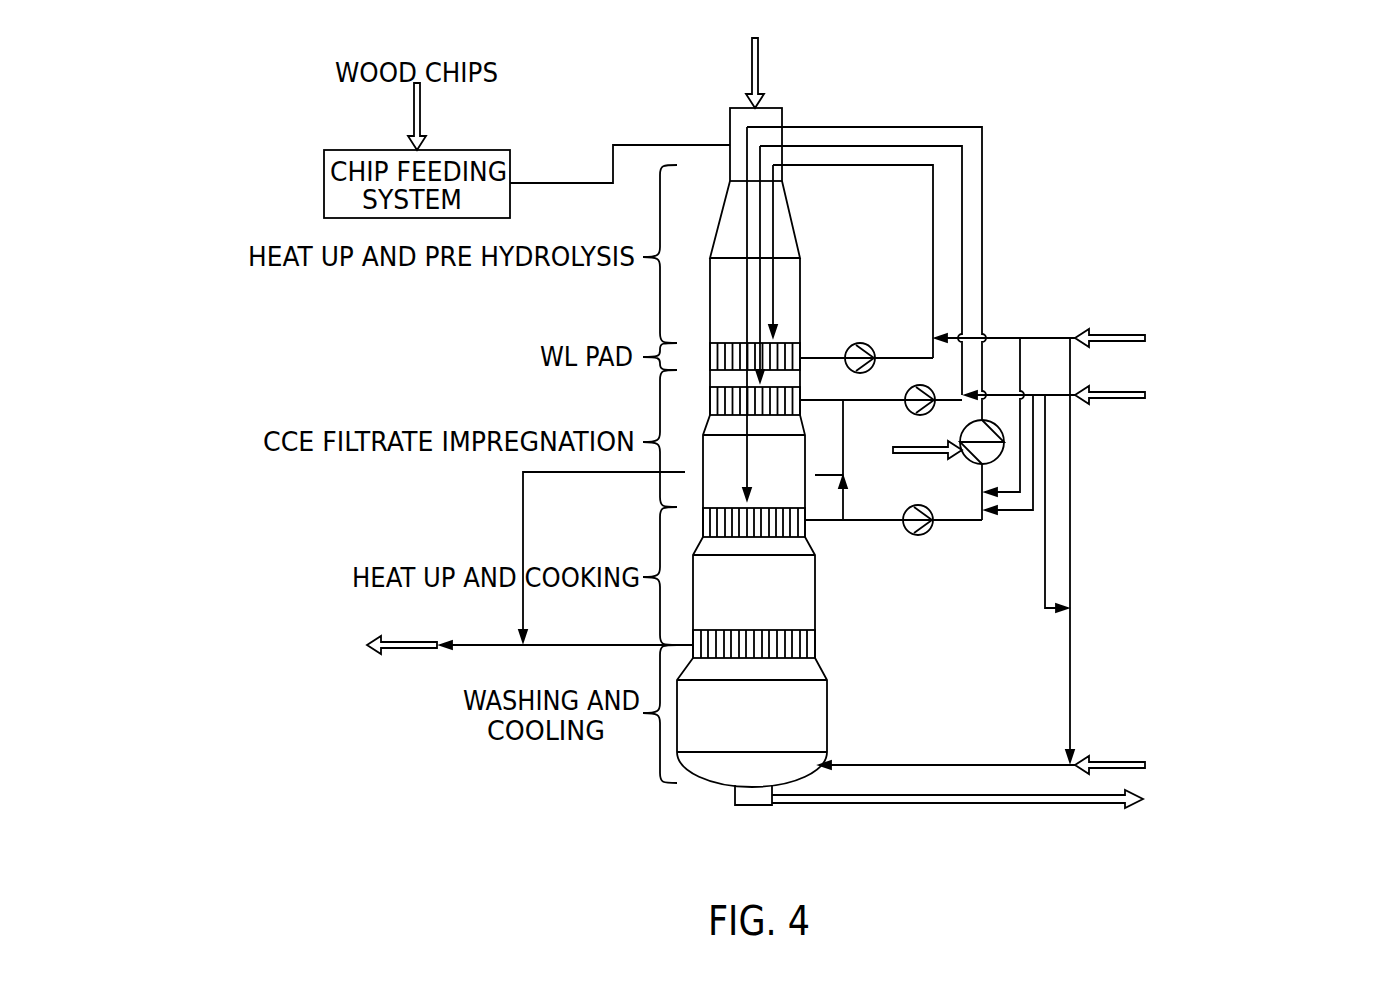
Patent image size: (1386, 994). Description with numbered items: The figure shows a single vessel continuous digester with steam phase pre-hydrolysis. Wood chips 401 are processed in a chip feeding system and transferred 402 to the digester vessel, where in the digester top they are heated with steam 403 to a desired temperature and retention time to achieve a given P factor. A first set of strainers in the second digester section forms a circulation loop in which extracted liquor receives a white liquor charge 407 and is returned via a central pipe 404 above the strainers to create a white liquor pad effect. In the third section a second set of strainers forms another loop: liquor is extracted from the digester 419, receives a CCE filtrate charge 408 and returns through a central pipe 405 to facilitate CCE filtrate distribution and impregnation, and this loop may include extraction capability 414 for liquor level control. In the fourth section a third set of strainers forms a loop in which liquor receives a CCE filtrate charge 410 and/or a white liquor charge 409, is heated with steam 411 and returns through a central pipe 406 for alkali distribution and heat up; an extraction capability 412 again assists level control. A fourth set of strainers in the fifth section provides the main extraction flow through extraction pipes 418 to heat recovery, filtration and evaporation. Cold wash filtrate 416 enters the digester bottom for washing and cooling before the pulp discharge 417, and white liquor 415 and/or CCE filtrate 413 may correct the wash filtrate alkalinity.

The wood chips 401 is at (422, 107).
The transfer to digester vessel 402 is at (562, 183).
The steam 403 is at (748, 67).
The central pipe 404 is at (928, 164).
The central pipe 405 is at (885, 145).
The central pipe 406 is at (838, 126).
The white liquor charge 407 is at (1115, 333).
The CCE filtrate charge 408 is at (1118, 400).
The white liquor charge 409 is at (1022, 362).
The CCE filtrate charge 410 is at (1013, 512).
The steam 411 is at (932, 455).
The extraction capability 412 is at (845, 497).
The CCE filtrate 413 is at (1040, 592).
The extraction capability 414 is at (522, 508).
The white liquor 415 is at (1068, 692).
The cold wash filtrate 416 is at (1115, 757).
The pulp discharge 417 is at (1110, 805).
The extraction pipes 418 is at (405, 650).
The liquor extraction 419 is at (887, 398).